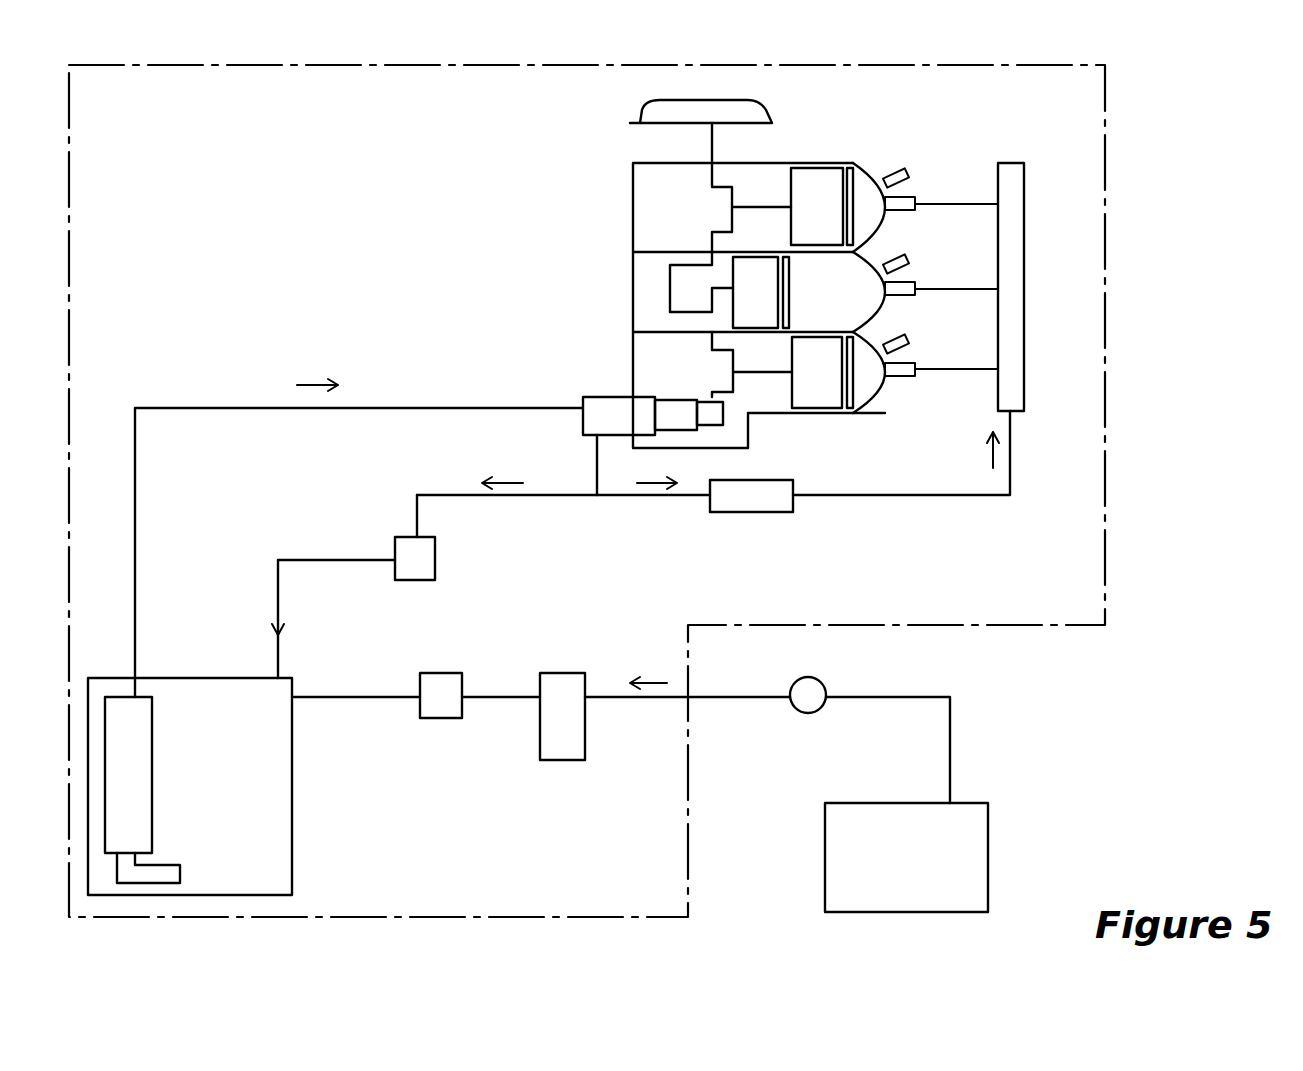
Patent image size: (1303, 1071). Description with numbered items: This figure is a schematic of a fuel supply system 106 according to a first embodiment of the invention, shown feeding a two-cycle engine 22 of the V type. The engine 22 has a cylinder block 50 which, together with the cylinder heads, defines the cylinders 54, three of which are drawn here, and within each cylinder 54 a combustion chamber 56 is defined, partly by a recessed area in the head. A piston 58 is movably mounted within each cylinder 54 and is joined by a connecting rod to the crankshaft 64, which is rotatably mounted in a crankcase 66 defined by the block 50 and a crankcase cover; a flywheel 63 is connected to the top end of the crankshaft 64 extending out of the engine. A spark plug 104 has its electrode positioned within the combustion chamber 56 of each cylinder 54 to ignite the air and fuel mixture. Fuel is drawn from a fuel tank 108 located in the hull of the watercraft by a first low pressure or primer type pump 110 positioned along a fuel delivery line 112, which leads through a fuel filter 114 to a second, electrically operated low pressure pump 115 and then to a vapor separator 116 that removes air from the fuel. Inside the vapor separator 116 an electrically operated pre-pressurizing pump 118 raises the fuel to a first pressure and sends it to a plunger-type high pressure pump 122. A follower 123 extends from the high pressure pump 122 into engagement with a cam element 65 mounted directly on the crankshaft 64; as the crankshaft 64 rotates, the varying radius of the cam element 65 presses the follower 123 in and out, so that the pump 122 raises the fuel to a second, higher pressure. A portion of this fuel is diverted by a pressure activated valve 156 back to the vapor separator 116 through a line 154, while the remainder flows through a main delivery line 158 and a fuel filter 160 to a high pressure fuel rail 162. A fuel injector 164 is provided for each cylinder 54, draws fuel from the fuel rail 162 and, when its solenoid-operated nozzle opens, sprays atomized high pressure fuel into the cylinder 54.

The engine 22 is at (869, 137).
The cylinder block 50 is at (633, 268).
The cylinder 54 is at (865, 178).
The combustion chamber 56 is at (867, 392).
The piston 58 is at (817, 390).
The flywheel 63 is at (660, 112).
The crankshaft 64 is at (713, 155).
The cam element 65 is at (710, 397).
The crankcase 66 is at (655, 210).
The spark plug 104 is at (902, 170).
The fuel supply system 106 is at (1108, 296).
The fuel tank 108 is at (977, 837).
The first low pressure pump 110 is at (810, 692).
The fuel delivery line 112 is at (950, 718).
The fuel filter 114 is at (567, 747).
The second low pressure pump 115 is at (440, 710).
The vapor separator 116 is at (278, 825).
The pre-pressurizing pump 118 is at (142, 765).
The high pressure pump 122 is at (592, 393).
The follower 123 is at (670, 397).
The line 154 is at (583, 495).
The pressure activated valve 156 is at (423, 555).
The main delivery line 158 is at (892, 495).
The fuel filter 160 is at (762, 502).
The high pressure fuel rail 162 is at (1018, 225).
The fuel injector 164 is at (885, 215).